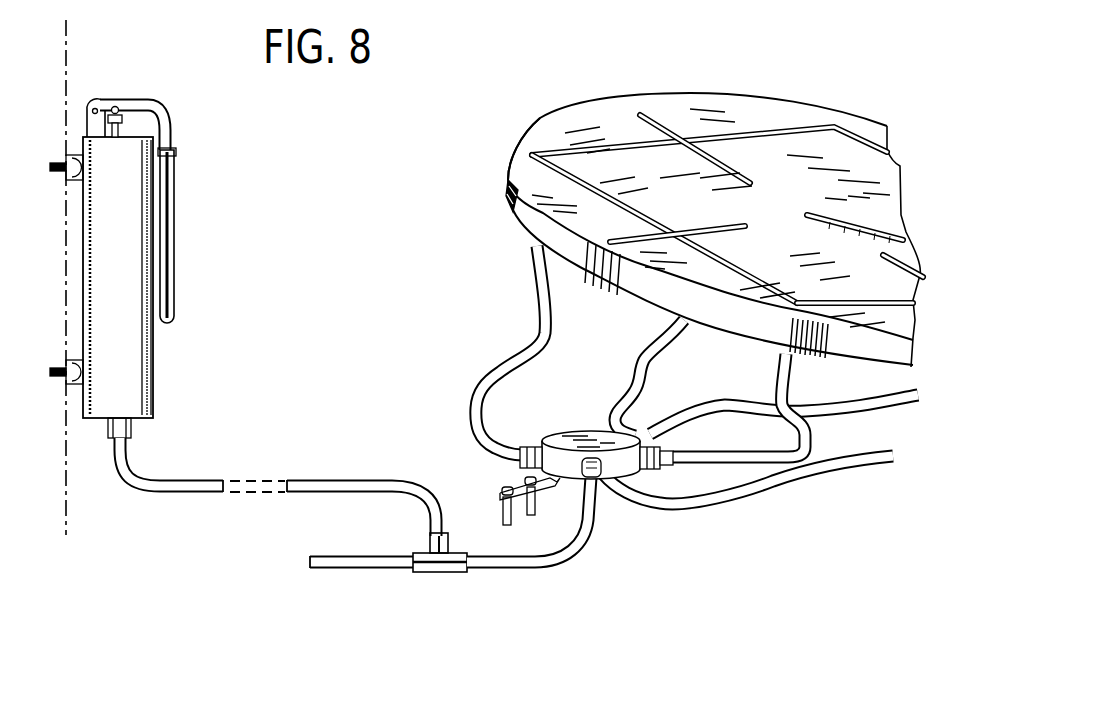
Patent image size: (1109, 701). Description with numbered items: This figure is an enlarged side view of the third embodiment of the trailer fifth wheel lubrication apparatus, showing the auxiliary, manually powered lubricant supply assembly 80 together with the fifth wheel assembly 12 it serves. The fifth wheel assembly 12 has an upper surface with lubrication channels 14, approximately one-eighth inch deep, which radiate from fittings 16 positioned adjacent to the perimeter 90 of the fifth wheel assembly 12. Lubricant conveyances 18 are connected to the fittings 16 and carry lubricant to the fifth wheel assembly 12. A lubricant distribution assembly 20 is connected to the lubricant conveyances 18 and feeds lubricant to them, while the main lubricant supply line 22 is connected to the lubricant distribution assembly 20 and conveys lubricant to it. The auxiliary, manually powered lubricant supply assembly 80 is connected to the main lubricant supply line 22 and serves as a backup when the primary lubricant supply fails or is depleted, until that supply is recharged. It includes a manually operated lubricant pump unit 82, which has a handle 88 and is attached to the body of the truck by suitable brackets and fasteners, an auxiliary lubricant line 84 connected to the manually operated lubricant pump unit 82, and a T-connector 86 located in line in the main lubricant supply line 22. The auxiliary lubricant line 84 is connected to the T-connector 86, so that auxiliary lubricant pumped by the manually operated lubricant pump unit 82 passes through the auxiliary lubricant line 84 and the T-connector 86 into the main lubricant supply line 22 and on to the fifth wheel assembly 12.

The fifth wheel assembly 12 is at (714, 215).
The lubrication channels 14 is at (640, 152).
The fittings 16 is at (790, 352).
The lubricant conveyances 18 is at (828, 527).
The lubricant distribution assembly 20 is at (589, 438).
The main lubricant supply line 22 is at (562, 570).
The auxiliary, manually powered lubricant supply assembly 80 is at (198, 268).
The manually operated lubricant pump unit 82 is at (120, 234).
The auxiliary lubricant line 84 is at (212, 484).
The T-connector 86 is at (453, 575).
The handle 88 is at (204, 235).
The perimeter 90 is at (532, 126).